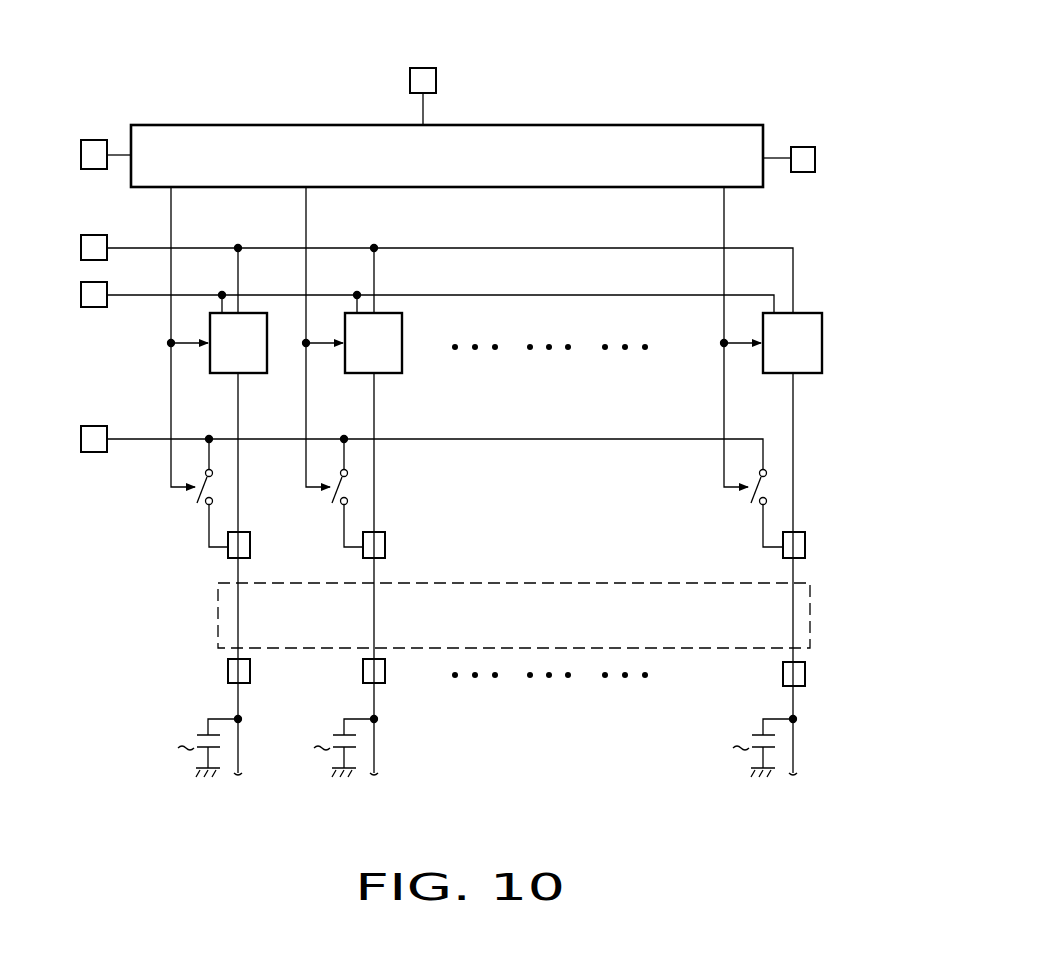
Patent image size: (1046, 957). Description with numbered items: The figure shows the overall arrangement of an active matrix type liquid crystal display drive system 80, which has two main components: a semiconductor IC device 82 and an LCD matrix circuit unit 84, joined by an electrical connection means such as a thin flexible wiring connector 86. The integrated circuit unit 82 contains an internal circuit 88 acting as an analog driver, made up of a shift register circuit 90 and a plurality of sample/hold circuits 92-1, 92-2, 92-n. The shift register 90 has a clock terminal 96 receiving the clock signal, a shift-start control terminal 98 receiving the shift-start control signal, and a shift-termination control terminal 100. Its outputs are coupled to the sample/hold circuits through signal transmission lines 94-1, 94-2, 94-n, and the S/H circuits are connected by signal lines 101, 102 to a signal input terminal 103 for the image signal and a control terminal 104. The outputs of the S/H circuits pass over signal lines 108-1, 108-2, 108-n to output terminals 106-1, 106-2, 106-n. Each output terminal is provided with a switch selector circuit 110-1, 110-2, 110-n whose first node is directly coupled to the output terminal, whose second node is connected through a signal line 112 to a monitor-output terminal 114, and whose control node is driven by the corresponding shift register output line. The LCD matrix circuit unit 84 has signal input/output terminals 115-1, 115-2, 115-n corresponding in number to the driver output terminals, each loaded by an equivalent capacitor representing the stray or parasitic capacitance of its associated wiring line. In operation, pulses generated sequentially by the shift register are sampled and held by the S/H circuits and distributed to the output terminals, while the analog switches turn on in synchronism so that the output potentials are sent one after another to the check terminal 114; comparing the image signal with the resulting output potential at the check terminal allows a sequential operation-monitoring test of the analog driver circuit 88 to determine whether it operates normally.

The LCD drive system 80 is at (770, 65).
The semiconductor IC device 82 is at (858, 95).
The LCD matrix circuit unit 84 is at (858, 657).
The thin flexible wiring connector 86 is at (812, 612).
The internal circuit 88 is at (212, 112).
The shift register circuit 90 is at (589, 125).
The clock terminal 96 is at (422, 67).
The shift-start control terminal 98 is at (93, 138).
The shift-termination control terminal 100 is at (802, 143).
The signal line 101 is at (539, 248).
The signal line 102 is at (544, 295).
The signal input terminal 103 is at (94, 231).
The control terminal 104 is at (97, 307).
The signal line 112 is at (544, 439).
The monitor-output terminal 114 is at (97, 452).
The signal transmission line 94-1 is at (174, 224).
The signal transmission line 94-2 is at (309, 224).
The signal transmission line 94-n is at (727, 224).
The sample/hold circuit 92-1 is at (221, 375).
The sample/hold circuit 92-2 is at (356, 375).
The sample/hold circuit 92-n is at (774, 375).
The signal line 108-1 is at (259, 478).
The signal line 108-2 is at (377, 476).
The signal line 108-n is at (810, 498).
The switch selector circuit 110-1 is at (192, 507).
The switch selector circuit 110-2 is at (326, 507).
The switch selector circuit 110-n is at (745, 507).
The output terminal 106-1 is at (226, 556).
The output terminal 106-2 is at (362, 560).
The output terminal 106-n is at (781, 562).
The signal input/output terminal 115-1 is at (251, 677).
The signal input/output terminal 115-2 is at (386, 680).
The signal input/output terminal 115-n is at (782, 670).